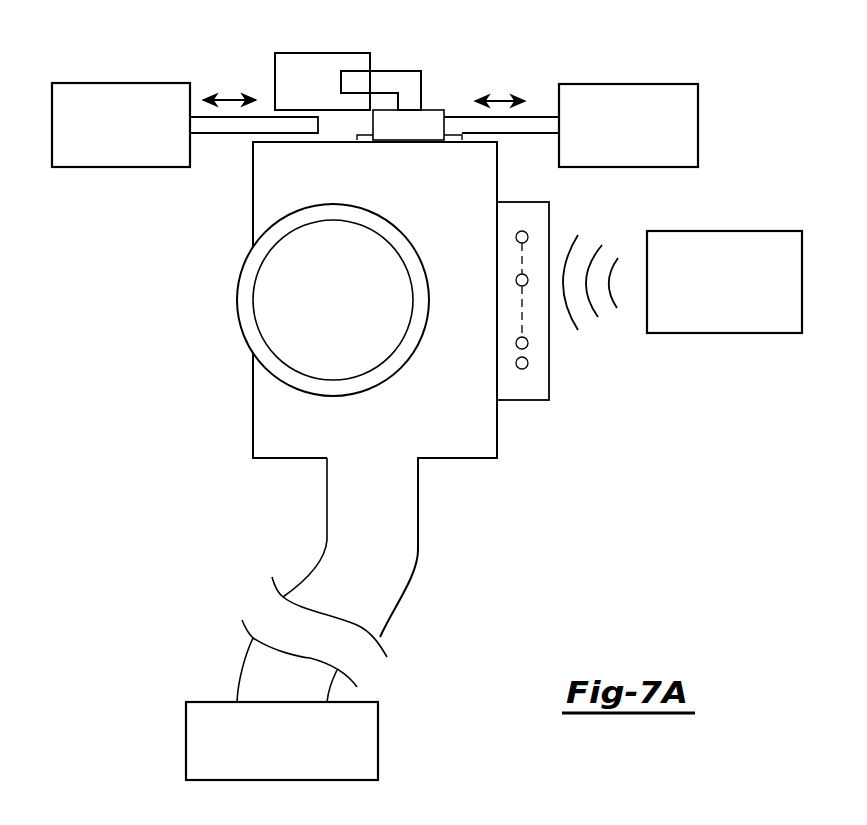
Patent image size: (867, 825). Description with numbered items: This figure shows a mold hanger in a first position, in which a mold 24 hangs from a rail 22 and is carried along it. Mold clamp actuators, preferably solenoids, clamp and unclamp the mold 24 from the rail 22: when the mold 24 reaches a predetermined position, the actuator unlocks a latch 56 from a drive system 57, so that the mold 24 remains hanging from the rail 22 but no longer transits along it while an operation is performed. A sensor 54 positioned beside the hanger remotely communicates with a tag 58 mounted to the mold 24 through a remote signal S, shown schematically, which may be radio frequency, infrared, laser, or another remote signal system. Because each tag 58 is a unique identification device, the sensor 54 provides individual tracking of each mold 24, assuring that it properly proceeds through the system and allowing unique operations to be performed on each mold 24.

The rail 22 is at (322, 311).
The mold 24 is at (378, 738).
The sensor 54 is at (745, 231).
The latch 56 is at (403, 71).
The drive system 57 is at (298, 53).
The tag 58 is at (549, 383).
The remote signal S is at (597, 313).